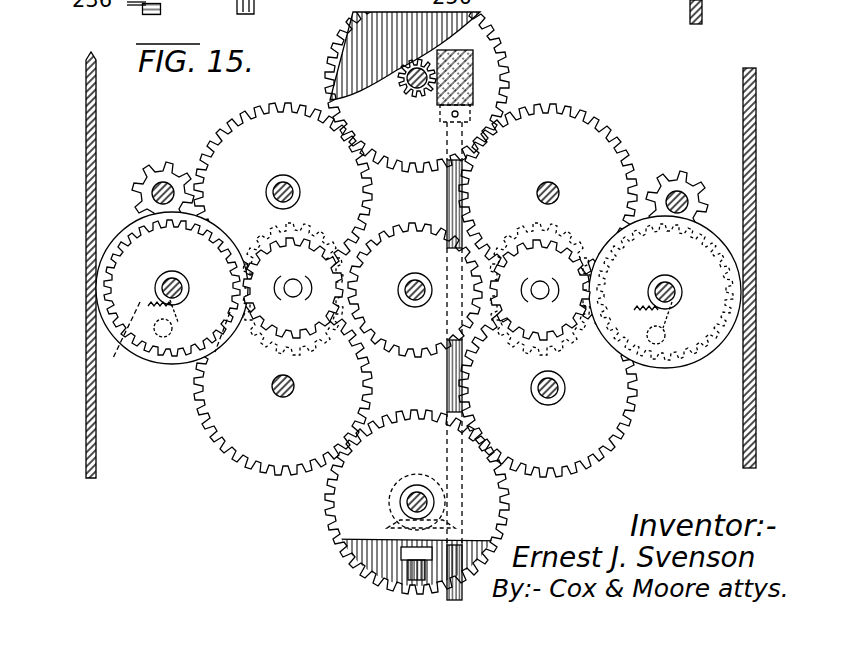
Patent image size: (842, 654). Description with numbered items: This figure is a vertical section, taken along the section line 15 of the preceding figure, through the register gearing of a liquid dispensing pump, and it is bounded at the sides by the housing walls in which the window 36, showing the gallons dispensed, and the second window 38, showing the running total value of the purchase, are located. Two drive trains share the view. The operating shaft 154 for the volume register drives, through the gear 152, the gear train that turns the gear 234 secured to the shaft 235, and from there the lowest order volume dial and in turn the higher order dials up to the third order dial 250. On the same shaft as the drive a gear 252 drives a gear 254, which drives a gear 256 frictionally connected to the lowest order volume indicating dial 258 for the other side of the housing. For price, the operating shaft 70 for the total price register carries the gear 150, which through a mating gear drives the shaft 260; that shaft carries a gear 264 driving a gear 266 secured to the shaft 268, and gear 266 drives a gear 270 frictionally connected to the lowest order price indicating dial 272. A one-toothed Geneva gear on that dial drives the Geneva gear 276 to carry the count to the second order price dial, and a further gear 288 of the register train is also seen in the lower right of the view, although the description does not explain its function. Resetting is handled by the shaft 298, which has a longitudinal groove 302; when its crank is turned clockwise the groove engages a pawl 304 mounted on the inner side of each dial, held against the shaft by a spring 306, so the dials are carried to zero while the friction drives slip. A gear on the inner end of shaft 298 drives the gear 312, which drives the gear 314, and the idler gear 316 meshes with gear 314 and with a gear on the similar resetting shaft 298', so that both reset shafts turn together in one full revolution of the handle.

The section line 15 is at (722, 14).
The window 36 is at (758, 292).
The second window 38 is at (85, 312).
The operating shaft 70 is at (410, 565).
The gear 150 is at (395, 534).
The gear 152 is at (473, 73).
The operating shaft 154 is at (452, 380).
The gear 234 is at (247, 128).
The shaft 235 is at (272, 182).
The third order dial 250 is at (417, 75).
The gear 252 is at (478, 43).
The gear 254 is at (558, 123).
The gear 256 is at (646, 240).
The lowest order volume indicating dial 258 is at (686, 365).
The shaft 260 is at (435, 504).
The gear 264 is at (336, 510).
The gear 266 is at (240, 440).
The shaft 268 is at (284, 397).
The gear 270 is at (186, 347).
The lowest order price indicating dial 272 is at (153, 362).
The Geneva gear 276 is at (142, 183).
The gear 288 is at (600, 452).
The resetting shaft 298 is at (172, 288).
The resetting shaft 298' is at (665, 292).
The groove 302 is at (183, 290).
The pawl 304 is at (173, 326).
The spring 306 is at (166, 339).
The gear 312 is at (340, 270).
The gear 314 is at (415, 243).
The idler gear 316 is at (578, 268).